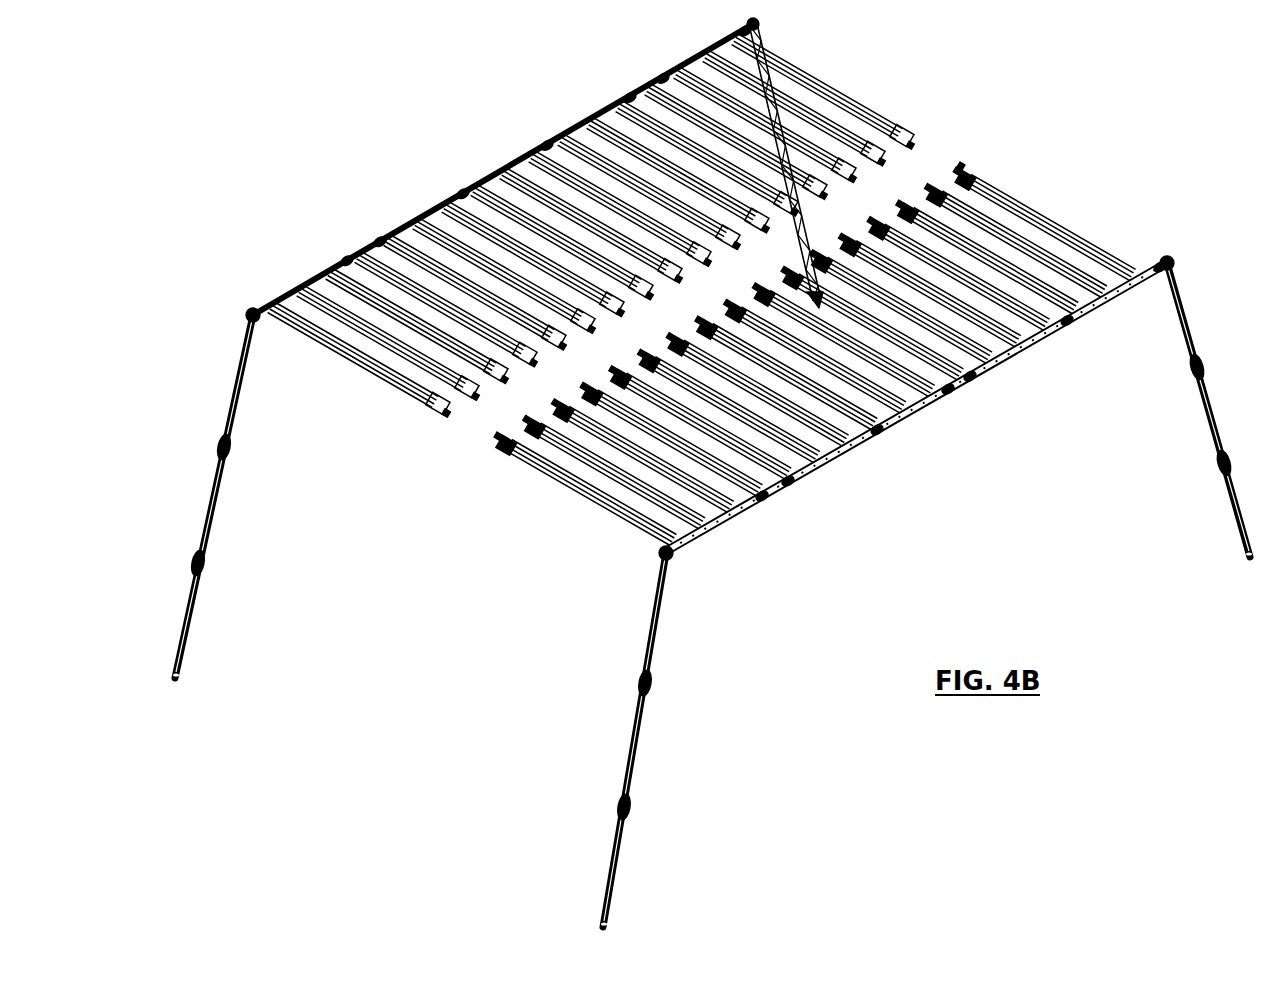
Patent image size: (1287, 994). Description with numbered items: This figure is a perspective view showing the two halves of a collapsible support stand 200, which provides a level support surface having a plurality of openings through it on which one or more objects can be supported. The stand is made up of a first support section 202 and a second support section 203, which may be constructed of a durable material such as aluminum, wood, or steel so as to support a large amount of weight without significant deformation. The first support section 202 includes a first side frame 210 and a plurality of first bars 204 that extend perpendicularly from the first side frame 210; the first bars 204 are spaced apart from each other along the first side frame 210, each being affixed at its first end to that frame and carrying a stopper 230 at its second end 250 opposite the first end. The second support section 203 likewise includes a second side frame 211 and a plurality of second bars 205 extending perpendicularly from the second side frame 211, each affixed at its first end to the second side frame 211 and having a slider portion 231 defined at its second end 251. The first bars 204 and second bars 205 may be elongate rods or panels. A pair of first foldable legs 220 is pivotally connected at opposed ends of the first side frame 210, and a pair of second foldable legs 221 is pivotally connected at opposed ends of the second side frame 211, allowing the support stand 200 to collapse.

The collapsible support stand 200 is at (682, 472).
The first support section 202 is at (812, 342).
The second support section 203 is at (605, 263).
The first bar 204 is at (1171, 228).
The second bar 205 is at (853, 88).
The first side frame 210 is at (917, 422).
The second side frame 211 is at (505, 155).
The first foldable leg 220 is at (634, 850).
The second foldable leg 221 is at (210, 462).
The stopper 230 is at (997, 168).
The slider portion 231 is at (455, 420).
The second end 250 is at (972, 175).
The second end 251 is at (450, 416).